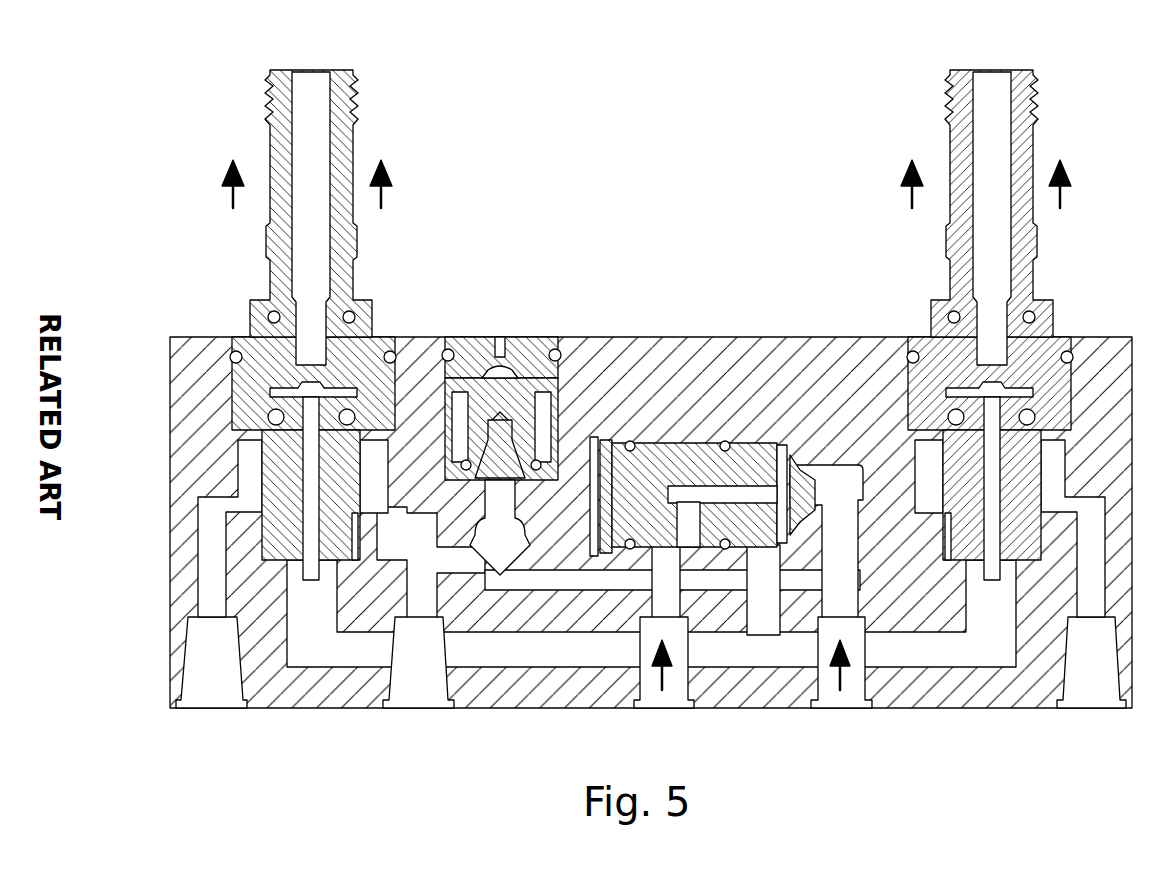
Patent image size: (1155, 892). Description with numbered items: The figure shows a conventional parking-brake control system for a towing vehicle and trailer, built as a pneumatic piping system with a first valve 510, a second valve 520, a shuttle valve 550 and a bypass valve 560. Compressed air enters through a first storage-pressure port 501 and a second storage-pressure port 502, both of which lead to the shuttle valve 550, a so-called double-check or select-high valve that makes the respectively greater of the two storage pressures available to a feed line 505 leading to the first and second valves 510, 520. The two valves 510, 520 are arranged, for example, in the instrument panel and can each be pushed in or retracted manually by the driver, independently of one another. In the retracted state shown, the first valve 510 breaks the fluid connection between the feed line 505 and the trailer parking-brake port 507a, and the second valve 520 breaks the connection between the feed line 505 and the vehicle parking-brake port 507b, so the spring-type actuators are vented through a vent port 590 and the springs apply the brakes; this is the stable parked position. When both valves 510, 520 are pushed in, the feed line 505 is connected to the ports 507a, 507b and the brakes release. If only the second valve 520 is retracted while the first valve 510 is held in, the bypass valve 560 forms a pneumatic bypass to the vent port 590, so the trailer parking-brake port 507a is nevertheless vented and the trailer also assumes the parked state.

The feed line 505 is at (518, 650).
The first storage-pressure port 501 is at (680, 702).
The second storage-pressure port 502 is at (853, 690).
The trailer parking-brake port 507a is at (215, 687).
The vehicle parking-brake port 507b is at (1098, 688).
The vent port 590 is at (420, 690).
The first valve 510 is at (352, 80).
The second valve 520 is at (1033, 85).
The bypass valve 560 is at (472, 337).
The shuttle valve 550 is at (765, 440).